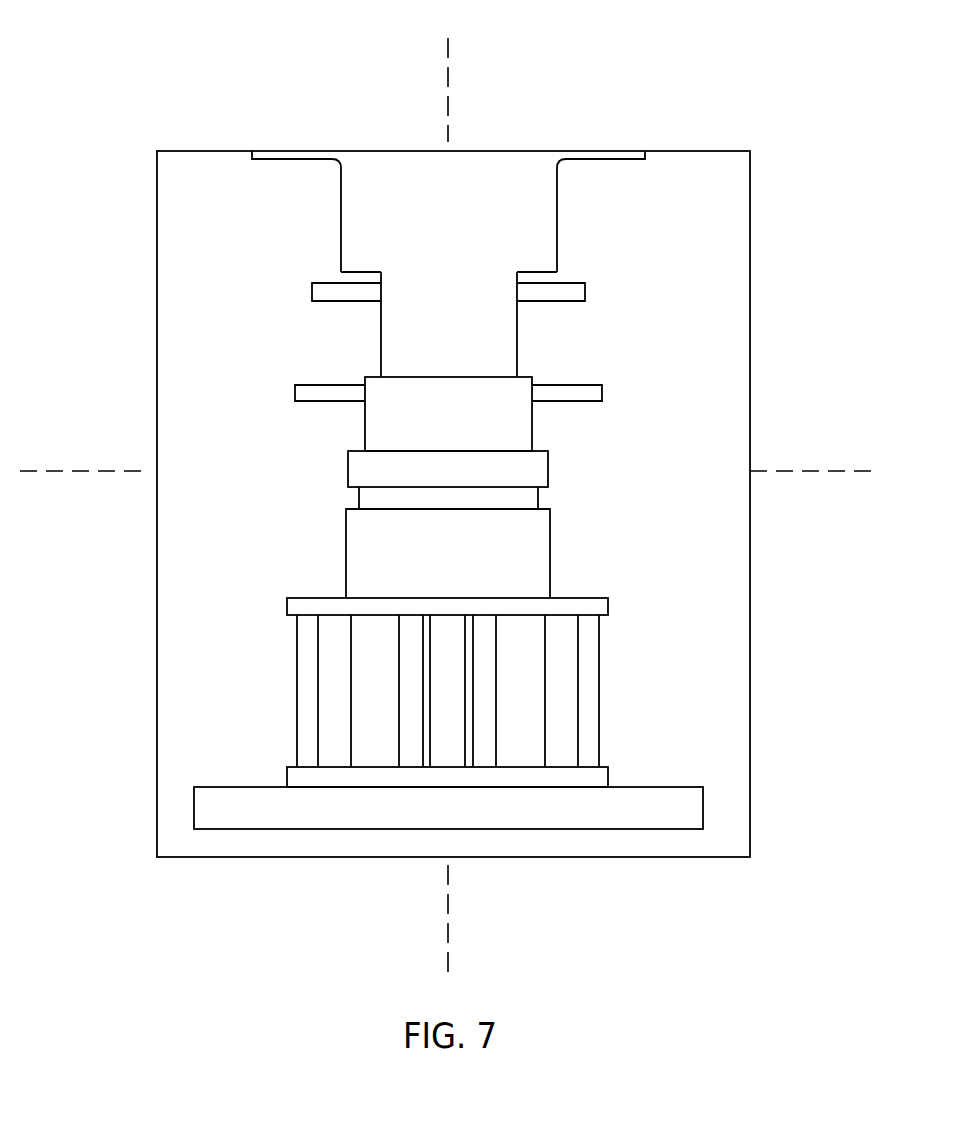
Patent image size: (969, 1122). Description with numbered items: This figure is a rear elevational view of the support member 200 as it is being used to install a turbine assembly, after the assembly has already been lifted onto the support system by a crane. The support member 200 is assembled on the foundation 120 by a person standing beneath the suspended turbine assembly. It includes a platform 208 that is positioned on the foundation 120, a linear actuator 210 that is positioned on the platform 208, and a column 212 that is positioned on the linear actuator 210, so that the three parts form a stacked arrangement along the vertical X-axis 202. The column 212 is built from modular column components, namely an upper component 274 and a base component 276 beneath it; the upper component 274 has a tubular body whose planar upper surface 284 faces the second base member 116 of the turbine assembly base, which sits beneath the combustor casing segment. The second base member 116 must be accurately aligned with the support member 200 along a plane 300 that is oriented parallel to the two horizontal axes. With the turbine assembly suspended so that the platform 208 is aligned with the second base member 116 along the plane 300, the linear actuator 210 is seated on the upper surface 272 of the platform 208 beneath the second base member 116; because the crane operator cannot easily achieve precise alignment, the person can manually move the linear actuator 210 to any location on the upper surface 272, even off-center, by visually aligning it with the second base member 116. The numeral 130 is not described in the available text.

The second base member 116 is at (490, 187).
The foundation 120 is at (687, 809).
The chamber / enclosure 130 is at (677, 662).
The support member 200 is at (448, 435).
The X-axis 202 is at (448, 40).
The platform 208 is at (282, 719).
The linear actuator 210 is at (592, 512).
The column 212 is at (530, 346).
The upper surface 272 is at (303, 598).
The upper component 274 is at (381, 328).
The base component 276 is at (365, 420).
The upper surface 284 is at (483, 272).
The plane 300 is at (818, 471).